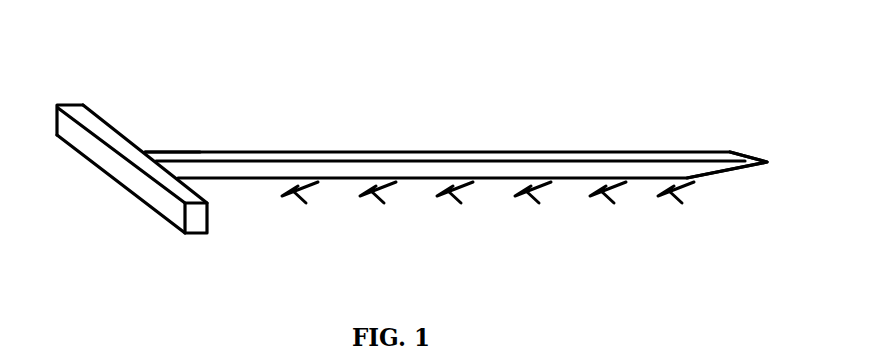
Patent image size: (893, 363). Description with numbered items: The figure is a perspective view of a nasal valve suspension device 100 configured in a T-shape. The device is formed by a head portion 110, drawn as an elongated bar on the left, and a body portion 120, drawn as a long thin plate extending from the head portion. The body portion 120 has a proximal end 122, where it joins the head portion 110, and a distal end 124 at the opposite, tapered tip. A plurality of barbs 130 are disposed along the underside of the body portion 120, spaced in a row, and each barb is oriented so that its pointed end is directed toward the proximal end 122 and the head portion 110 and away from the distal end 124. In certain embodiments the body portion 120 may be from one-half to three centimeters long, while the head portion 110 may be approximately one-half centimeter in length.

The nasal valve suspension device 100 is at (445, 38).
The head portion 110 is at (122, 187).
The body portion 120 is at (333, 151).
The proximal end 122 is at (143, 151).
The distal end 124 is at (740, 150).
The barbs 130 is at (683, 195).